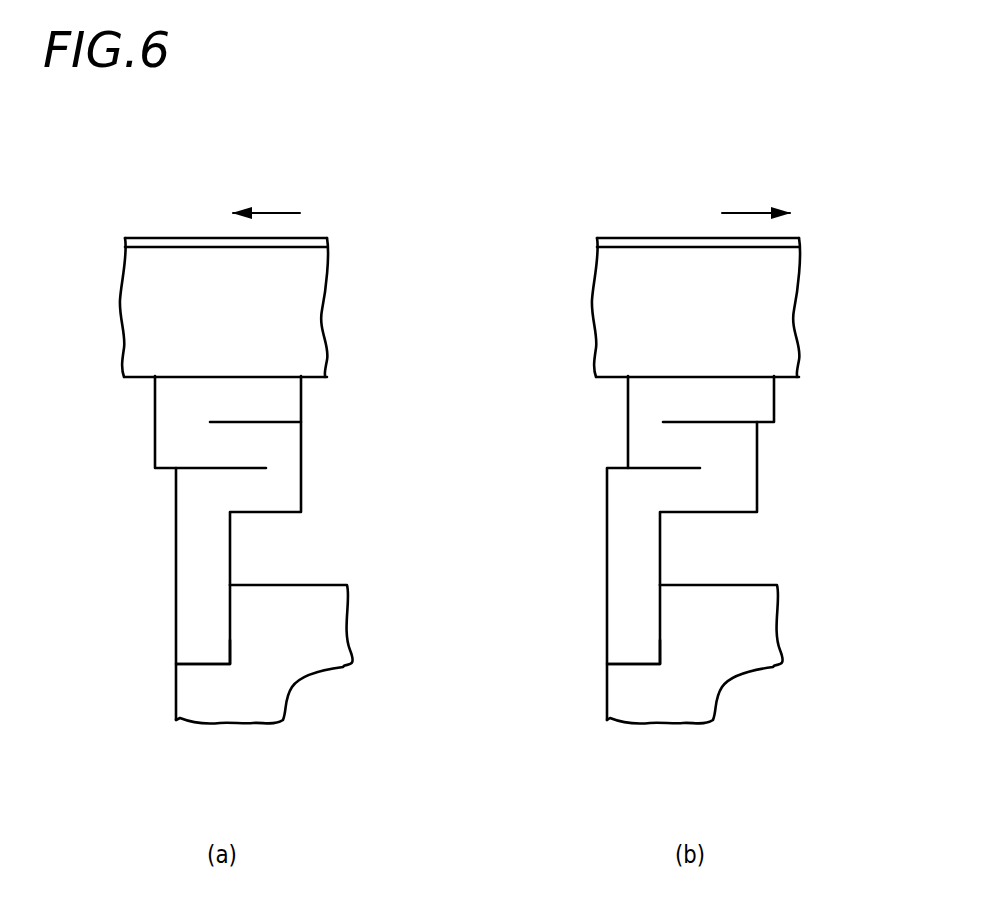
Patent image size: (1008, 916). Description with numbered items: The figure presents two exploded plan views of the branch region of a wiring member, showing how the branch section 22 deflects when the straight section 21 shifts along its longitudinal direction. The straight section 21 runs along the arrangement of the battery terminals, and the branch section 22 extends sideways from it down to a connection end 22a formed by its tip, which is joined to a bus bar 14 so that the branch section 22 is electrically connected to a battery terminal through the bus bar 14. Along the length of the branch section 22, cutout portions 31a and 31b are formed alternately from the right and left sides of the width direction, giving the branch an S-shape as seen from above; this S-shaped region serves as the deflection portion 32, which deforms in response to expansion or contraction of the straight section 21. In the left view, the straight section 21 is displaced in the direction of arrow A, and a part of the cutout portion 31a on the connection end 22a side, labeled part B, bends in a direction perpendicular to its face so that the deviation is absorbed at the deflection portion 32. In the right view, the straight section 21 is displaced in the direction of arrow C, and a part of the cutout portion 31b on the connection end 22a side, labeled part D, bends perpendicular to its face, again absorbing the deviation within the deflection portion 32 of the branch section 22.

The straight section 21 is at (201, 236).
The branch section 22 is at (174, 513).
The connection end 22a is at (203, 638).
The cutout portion 31a is at (215, 467).
The cutout portion 31b is at (270, 421).
The deflection portion 32 is at (305, 456).
The bus bar 14 is at (229, 697).
The arrow A is at (275, 211).
The part B is at (252, 498).
The arrow C is at (748, 211).
The part D is at (680, 442).